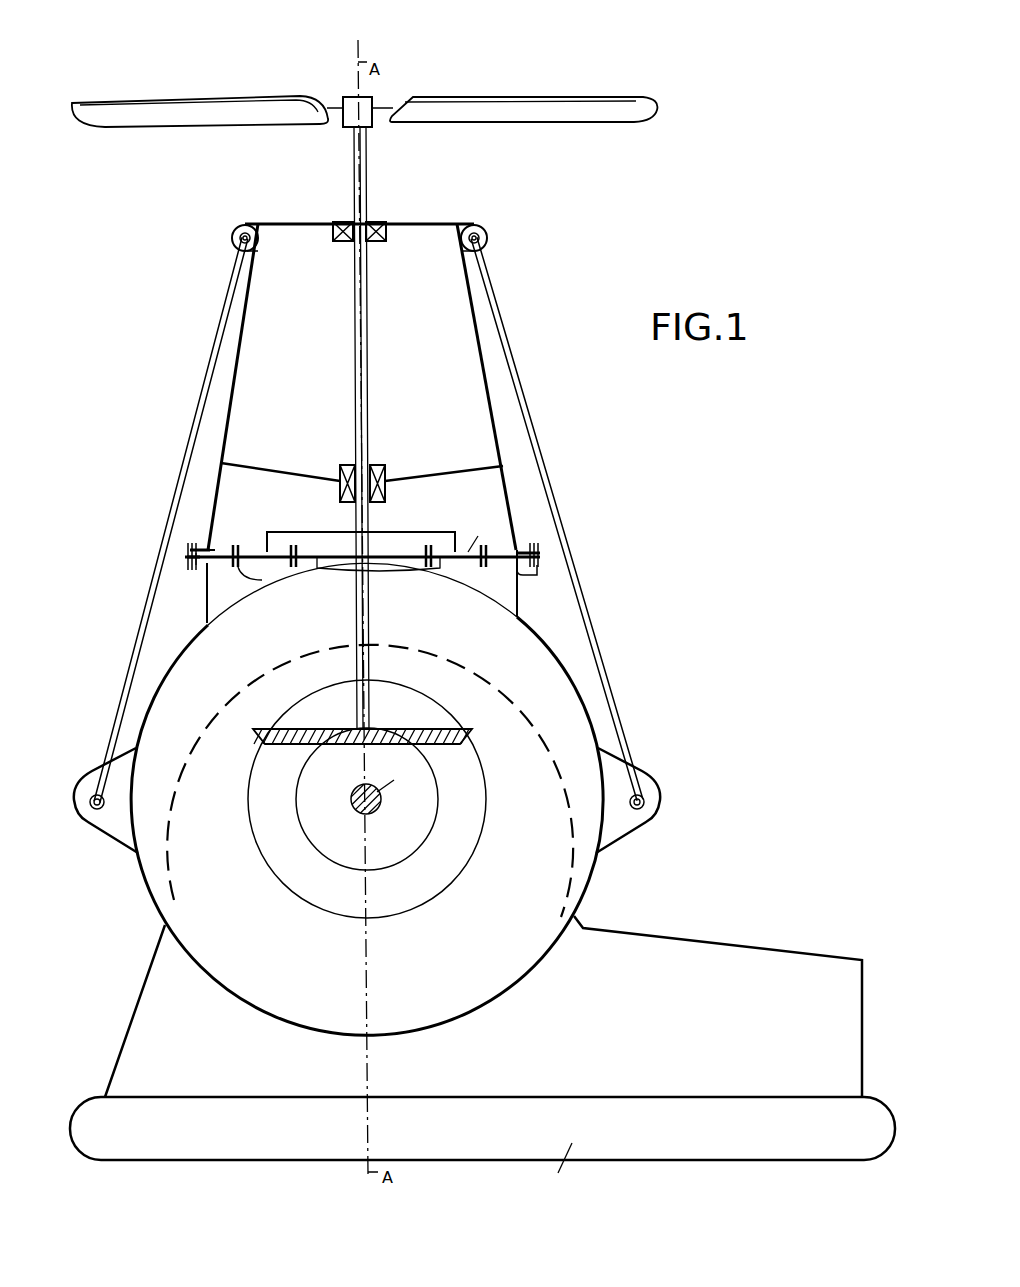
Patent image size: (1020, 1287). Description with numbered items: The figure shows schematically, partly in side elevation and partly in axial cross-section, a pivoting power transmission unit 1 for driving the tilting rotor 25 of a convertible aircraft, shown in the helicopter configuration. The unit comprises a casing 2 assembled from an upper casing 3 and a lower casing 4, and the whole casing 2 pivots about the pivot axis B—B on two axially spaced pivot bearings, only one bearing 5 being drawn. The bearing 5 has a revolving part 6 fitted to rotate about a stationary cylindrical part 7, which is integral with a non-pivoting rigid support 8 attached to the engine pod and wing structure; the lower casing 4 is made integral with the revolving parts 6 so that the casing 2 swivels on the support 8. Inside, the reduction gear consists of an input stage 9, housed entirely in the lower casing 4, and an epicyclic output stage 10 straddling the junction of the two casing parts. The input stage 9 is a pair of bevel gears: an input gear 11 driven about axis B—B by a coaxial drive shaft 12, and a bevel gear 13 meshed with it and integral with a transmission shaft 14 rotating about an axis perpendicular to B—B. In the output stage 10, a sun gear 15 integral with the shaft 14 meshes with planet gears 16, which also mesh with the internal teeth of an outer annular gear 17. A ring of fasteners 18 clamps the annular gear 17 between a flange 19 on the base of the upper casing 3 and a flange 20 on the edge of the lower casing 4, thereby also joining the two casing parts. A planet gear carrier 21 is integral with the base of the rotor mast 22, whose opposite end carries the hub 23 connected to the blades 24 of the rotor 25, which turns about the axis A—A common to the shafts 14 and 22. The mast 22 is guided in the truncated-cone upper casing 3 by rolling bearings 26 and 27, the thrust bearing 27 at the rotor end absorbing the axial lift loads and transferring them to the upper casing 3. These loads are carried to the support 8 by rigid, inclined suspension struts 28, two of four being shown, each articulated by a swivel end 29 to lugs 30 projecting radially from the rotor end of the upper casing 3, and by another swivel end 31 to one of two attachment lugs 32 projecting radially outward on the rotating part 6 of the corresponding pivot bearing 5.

The pivoting power transmission unit 1 is at (507, 297).
The casing 2 is at (493, 407).
The upper casing 3 is at (493, 425).
The lower casing 4 is at (517, 593).
The pivot bearing 5 is at (562, 652).
The revolving part 6 is at (570, 732).
The stationary cylindrical part 7 is at (440, 875).
The rigid support 8 is at (767, 963).
The input stage 9 is at (298, 752).
The output stage 10 is at (253, 550).
The input gear 11 is at (414, 822).
The drive shaft 12 is at (358, 804).
The bevel gear 13 is at (473, 730).
The transmission shaft 14 is at (370, 622).
The sun gear 15 is at (318, 563).
The planet gears 16 is at (478, 538).
The annular gear 17 is at (194, 563).
The fasteners 18 is at (537, 573).
The attachment flange 19 is at (190, 545).
The attachment flange 20 is at (187, 560).
The planet gear carrier 21 is at (417, 532).
The rotor mast 22 is at (360, 343).
The hub 23 is at (350, 97).
The blades 24 is at (523, 110).
The rotor 25 is at (632, 80).
The rolling bearing 26 is at (376, 470).
The thrust bearing 27 is at (384, 222).
The suspension struts 28 is at (505, 333).
The swivel end 29 is at (480, 236).
The lugs 30 is at (474, 232).
The swivel end 31 is at (650, 796).
The attachment lugs 32 is at (640, 818).